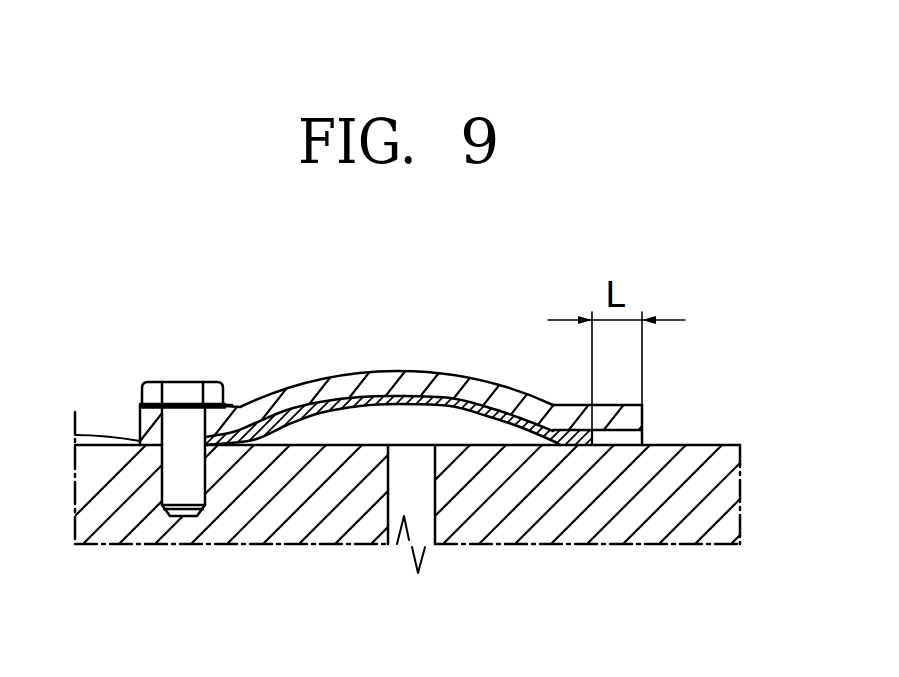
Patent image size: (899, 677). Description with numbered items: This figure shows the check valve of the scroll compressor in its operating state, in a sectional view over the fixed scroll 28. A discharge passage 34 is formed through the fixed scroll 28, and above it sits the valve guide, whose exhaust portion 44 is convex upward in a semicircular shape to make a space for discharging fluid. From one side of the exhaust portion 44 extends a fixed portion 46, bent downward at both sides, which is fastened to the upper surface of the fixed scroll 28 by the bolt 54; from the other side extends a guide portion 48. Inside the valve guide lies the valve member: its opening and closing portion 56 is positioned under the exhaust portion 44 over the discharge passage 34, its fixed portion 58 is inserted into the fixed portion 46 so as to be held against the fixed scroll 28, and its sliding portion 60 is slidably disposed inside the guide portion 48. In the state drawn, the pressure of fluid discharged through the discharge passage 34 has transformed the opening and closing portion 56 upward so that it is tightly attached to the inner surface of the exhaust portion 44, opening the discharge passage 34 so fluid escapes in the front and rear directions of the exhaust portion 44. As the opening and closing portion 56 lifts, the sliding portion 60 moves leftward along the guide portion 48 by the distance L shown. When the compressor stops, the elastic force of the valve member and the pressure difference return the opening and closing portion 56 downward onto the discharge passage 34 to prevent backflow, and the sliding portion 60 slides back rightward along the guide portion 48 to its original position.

The fixed scroll 28 is at (727, 525).
The discharge passage 34 is at (417, 512).
The exhaust portion 44 is at (423, 380).
The fixed portion 46 is at (147, 423).
The guide portion 48 is at (620, 415).
The bolt 54 is at (178, 390).
The opening and closing portion 56 is at (338, 407).
The fixed portion 58 is at (75, 435).
The sliding portion 60 is at (568, 445).